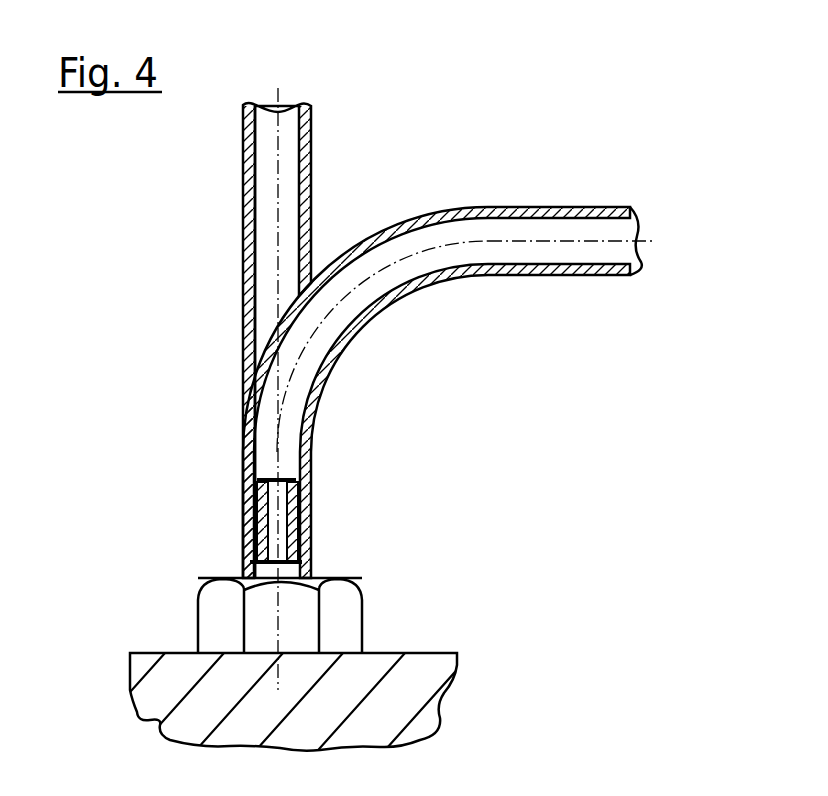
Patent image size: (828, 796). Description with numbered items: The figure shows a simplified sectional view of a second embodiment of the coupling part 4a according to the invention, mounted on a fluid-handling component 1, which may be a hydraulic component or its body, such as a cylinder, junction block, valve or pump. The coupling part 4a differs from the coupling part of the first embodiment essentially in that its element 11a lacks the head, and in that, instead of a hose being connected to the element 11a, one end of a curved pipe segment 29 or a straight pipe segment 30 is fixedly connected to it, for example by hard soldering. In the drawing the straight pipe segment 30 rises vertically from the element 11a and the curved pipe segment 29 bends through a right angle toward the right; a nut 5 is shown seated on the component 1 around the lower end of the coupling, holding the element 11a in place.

The fluid-handling component 1 is at (412, 700).
The coupling part 4a is at (575, 175).
The nut 5 is at (345, 617).
The element 11a is at (312, 550).
The curved pipe segment 29 is at (537, 272).
The straight pipe segment 30 is at (248, 220).